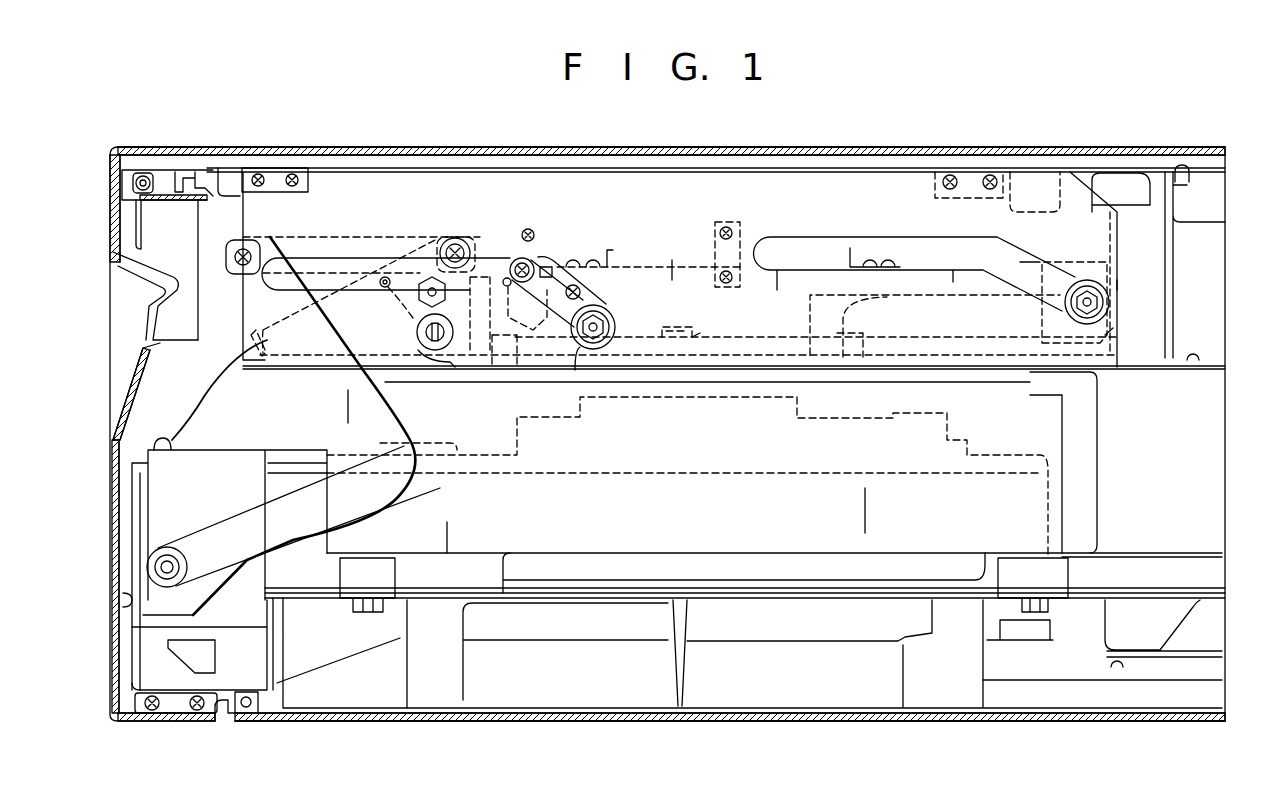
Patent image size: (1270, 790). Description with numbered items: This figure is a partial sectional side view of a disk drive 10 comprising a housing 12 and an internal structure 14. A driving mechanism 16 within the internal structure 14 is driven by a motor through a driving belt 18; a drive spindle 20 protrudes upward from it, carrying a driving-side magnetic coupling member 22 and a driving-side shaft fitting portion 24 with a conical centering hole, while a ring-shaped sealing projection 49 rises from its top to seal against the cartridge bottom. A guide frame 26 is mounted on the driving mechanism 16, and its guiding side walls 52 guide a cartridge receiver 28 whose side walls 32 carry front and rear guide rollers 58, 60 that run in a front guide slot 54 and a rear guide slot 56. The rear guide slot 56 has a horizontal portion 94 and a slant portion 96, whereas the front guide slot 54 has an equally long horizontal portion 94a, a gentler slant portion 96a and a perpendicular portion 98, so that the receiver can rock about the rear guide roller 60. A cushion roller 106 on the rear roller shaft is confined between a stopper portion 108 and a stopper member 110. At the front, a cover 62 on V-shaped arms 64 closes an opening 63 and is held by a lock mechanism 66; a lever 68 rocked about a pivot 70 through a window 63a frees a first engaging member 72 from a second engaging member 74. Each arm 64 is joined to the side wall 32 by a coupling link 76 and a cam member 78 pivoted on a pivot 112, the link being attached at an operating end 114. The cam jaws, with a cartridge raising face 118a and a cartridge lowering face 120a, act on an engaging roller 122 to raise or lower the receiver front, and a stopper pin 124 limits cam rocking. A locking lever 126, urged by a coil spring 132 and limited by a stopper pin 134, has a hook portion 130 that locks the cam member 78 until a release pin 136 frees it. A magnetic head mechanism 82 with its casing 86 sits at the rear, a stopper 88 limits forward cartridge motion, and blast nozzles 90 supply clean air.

The disk drive 10 is at (966, 130).
The housing 12 is at (990, 158).
The internal structure 14 is at (1195, 445).
The driving mechanism 16 is at (1030, 518).
The driving belt 18 is at (1064, 708).
The drive spindle 20 is at (676, 325).
The driving-side magnetic coupling member 22 is at (782, 374).
The driving-side shaft fitting portion 24 is at (692, 334).
The guide frame 26 is at (740, 168).
The cartridge receiver 28 is at (673, 273).
The side walls 32 is at (648, 264).
The sealing projection 49 is at (860, 337).
The guiding side walls 52 is at (795, 170).
The front guide slot 54 is at (352, 251).
The rear guide slot 56 is at (870, 237).
The front guide roller 58 is at (578, 350).
The rear guide roller 60 is at (1062, 306).
The cover 62 is at (108, 197).
The opening 63 is at (109, 330).
The window 63a is at (148, 276).
The V-shaped arms 64 is at (224, 528).
The lock mechanism 66 is at (191, 168).
The lever 68 is at (155, 224).
The pivot 70 is at (142, 175).
The first engaging member 72 is at (208, 192).
The second engaging member 74 is at (245, 168).
The coupling link 76 is at (278, 242).
The cam member 78 is at (470, 358).
The magnetic head mechanism 82 is at (1194, 212).
The casing 86 is at (1118, 172).
The stopper 88 is at (250, 346).
The blast nozzles 90 is at (943, 294).
The horizontal portion 94 is at (787, 250).
The horizontal portion 94a is at (328, 258).
The slant portion 96 is at (1035, 262).
The slant portion 96a is at (571, 266).
The perpendicular portion 98 is at (603, 308).
The cushion roller 106 is at (1118, 278).
The stopper portion 108 is at (1113, 326).
The stopper member 110 is at (728, 222).
The pivot 112 is at (416, 292).
The operating end 114 is at (453, 238).
The cartridge raising face 118a is at (405, 316).
The cartridge lowering face 120a is at (437, 352).
The engaging roller 122 is at (417, 338).
The stopper pin 124 is at (387, 276).
The locking lever 126 is at (510, 260).
The hook portion 130 is at (508, 362).
The coil spring 132 is at (538, 265).
The stopper pin 134 is at (505, 288).
The release pin 136 is at (531, 230).